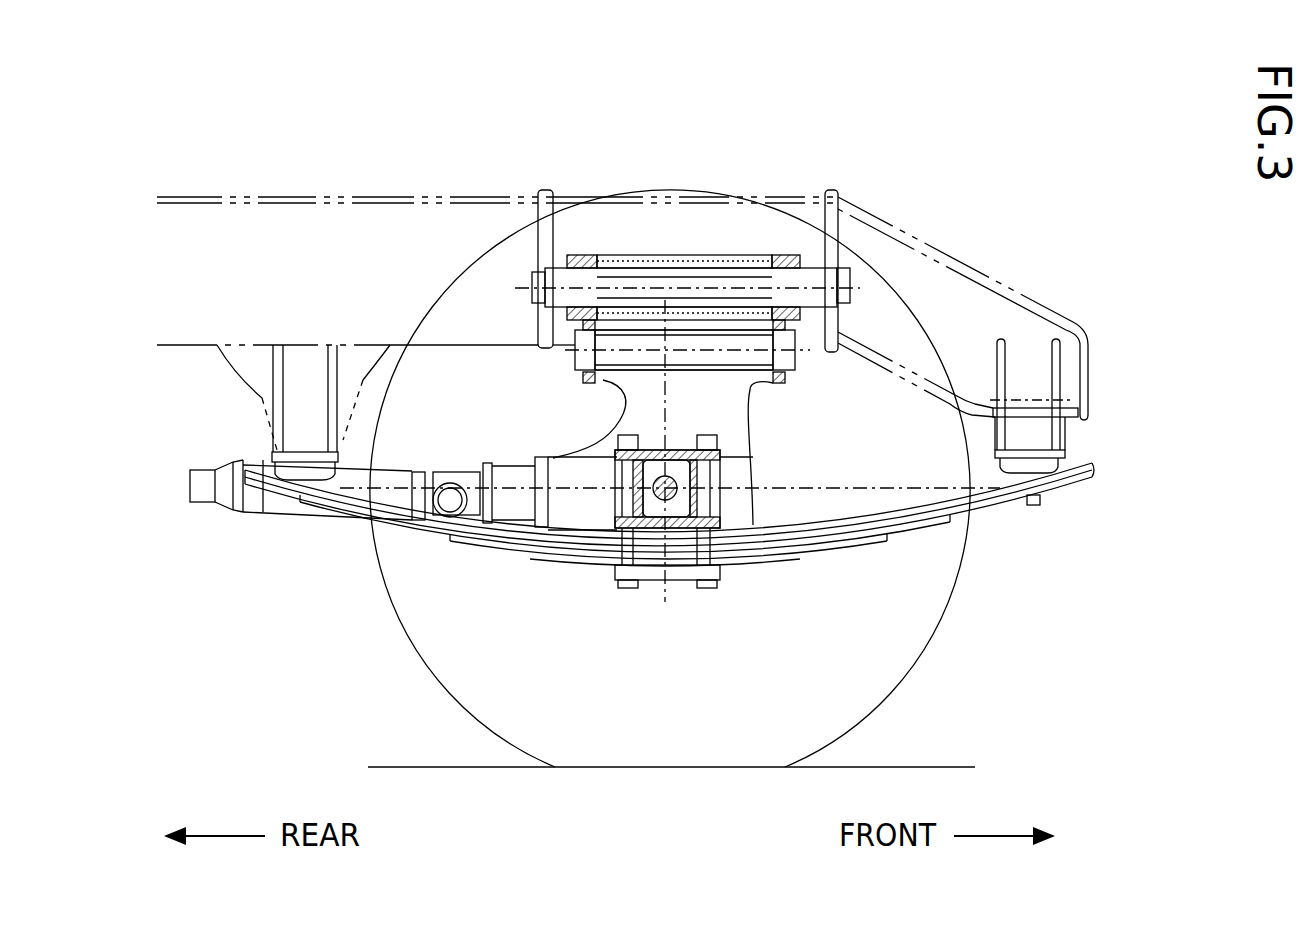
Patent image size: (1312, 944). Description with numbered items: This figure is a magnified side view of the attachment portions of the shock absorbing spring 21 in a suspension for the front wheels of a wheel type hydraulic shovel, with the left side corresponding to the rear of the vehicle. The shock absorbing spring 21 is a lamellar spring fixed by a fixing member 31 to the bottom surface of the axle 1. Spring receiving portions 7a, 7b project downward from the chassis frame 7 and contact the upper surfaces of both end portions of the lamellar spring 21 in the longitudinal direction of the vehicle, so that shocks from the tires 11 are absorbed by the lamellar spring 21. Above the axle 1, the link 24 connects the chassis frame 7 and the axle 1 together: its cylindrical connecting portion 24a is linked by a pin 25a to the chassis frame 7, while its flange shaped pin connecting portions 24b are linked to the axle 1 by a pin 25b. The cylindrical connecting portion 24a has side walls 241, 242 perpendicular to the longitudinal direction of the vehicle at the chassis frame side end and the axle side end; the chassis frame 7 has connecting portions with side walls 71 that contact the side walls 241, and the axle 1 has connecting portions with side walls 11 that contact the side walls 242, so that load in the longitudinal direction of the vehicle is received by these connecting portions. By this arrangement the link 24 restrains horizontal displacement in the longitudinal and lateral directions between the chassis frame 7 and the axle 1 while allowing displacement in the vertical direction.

The axle 1 is at (723, 457).
The side walls 11 is at (582, 372).
The shock absorbing spring 21 is at (510, 552).
The link 24 is at (691, 222).
The cylindrical connecting portion 24a is at (743, 247).
The pin connecting portions 24b is at (583, 378).
The side walls 241 is at (563, 260).
The side walls 242 is at (607, 398).
The pin 25a is at (850, 275).
The pin 25b is at (797, 360).
The fixing member 31 is at (652, 580).
The chassis frame 7 is at (258, 230).
The spring receiving portion 7a is at (300, 472).
The spring receiving portion 7b is at (1040, 506).
The side walls 71 is at (613, 293).